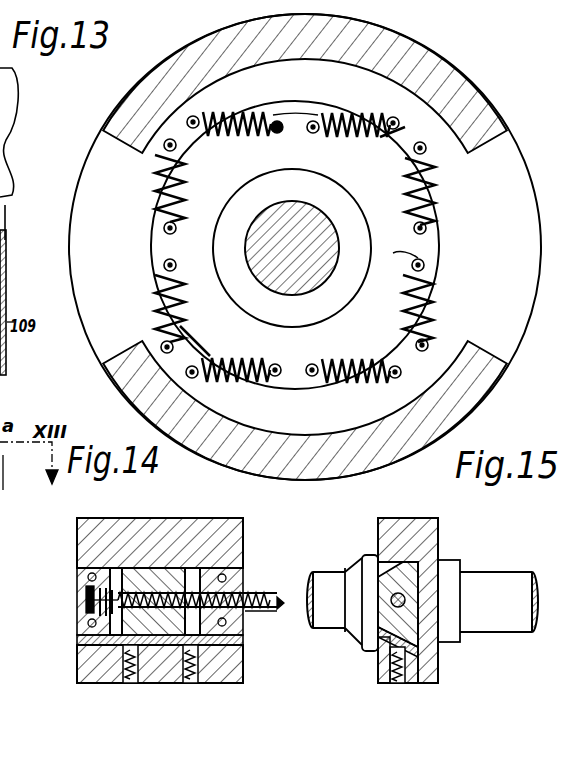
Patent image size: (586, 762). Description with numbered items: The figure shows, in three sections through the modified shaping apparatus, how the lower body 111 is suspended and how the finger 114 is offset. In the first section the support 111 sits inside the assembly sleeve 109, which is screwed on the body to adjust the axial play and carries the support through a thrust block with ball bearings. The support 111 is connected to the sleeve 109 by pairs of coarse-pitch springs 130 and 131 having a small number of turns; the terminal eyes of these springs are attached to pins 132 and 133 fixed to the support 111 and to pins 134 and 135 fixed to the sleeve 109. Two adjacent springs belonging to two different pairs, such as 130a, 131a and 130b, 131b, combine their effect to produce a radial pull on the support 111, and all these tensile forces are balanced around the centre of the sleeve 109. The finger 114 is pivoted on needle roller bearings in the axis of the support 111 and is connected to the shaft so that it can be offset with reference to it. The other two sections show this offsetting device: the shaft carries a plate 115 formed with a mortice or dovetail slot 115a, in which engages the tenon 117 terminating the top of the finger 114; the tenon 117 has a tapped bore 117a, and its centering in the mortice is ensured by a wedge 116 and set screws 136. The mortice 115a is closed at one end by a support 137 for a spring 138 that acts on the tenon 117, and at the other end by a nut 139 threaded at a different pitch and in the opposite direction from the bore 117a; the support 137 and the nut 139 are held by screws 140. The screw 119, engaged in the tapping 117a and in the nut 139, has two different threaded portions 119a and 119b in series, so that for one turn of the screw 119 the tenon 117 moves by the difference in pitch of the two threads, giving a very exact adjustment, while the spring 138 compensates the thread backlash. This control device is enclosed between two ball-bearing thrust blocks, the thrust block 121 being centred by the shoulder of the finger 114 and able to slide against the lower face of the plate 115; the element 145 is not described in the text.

In FIG. 13, the assembly sleeve 109 is at (480, 117).
In FIG. 13, the lower body 111 is at (418, 258).
In FIG. 13, the finger 114 is at (318, 225).
In FIG. 15, the finger 114 is at (323, 583).
In FIG. 14, the plate 115 is at (202, 530).
In FIG. 15, the plate 115 is at (425, 541).
In FIG. 15, the mortice or dovetail slot 115a is at (403, 563).
In FIG. 14, the wedge 116 is at (77, 641).
In FIG. 15, the wedge 116 is at (423, 648).
In FIG. 14, the tenon 117 is at (140, 580).
In FIG. 15, the tenon 117 is at (387, 578).
In FIG. 15, the tapped bore 117a is at (437, 641).
In FIG. 14, the screw 119 is at (268, 612).
In FIG. 14, the threaded portion 119a is at (258, 594).
In FIG. 14, the threaded portion 119b is at (147, 582).
In FIG. 13, the ball bearing thrust block 121 is at (333, 297).
In FIG. 13, the coarse-pitch spring 130 is at (247, 111).
In FIG. 13, the spring 130a is at (434, 197).
In FIG. 13, the spring 130b is at (157, 310).
In FIG. 13, the coarse-pitch spring 131 is at (155, 190).
In FIG. 13, the spring 131a is at (340, 113).
In FIG. 13, the spring 131b is at (250, 385).
In FIG. 13, the pin 132 is at (280, 112).
In FIG. 13, the pin 133 is at (307, 112).
In FIG. 13, the pin 134 is at (189, 117).
In FIG. 13, the pin 135 is at (200, 366).
In FIG. 14, the set screw 136 is at (200, 672).
In FIG. 15, the set screw 136 is at (390, 668).
In FIG. 14, the support 137 is at (85, 604).
In FIG. 14, the spring 138 is at (86, 589).
In FIG. 14, the nut 139 is at (213, 565).
In FIG. 14, the screw 140 is at (225, 576).
In FIG. 15, the output shaft 145 is at (487, 588).